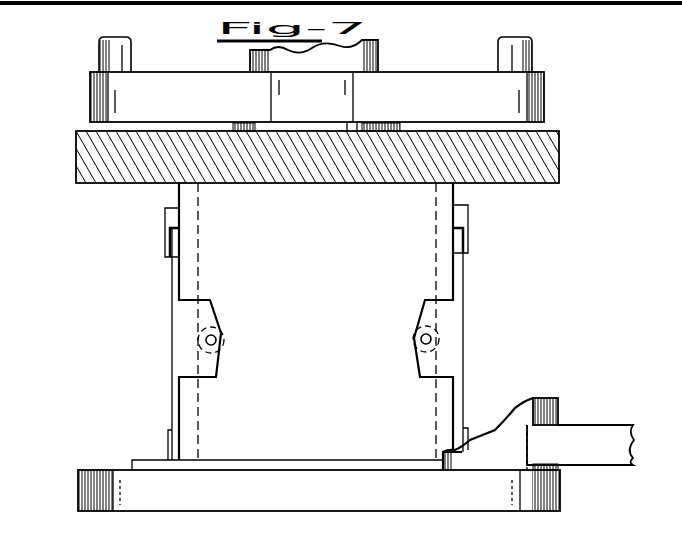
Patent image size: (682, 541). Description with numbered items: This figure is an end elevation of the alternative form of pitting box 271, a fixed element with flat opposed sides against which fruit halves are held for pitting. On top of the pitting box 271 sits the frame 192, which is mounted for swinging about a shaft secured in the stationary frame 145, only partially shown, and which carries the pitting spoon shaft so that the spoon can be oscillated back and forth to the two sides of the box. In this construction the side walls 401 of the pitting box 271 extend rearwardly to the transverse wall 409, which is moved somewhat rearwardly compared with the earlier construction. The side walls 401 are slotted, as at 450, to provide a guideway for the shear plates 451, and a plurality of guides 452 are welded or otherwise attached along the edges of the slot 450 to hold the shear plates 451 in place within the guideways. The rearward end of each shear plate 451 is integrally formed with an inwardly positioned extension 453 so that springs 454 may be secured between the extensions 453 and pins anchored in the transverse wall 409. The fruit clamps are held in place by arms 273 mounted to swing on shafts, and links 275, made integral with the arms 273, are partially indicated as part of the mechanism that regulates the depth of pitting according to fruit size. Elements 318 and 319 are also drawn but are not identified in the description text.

The guide post 318 is at (115, 52).
The upper plate 319 is at (123, 95).
The frame 192 is at (346, 66).
The stationary frame 145 is at (112, 160).
The transverse wall 409 is at (339, 249).
The side walls 401 is at (178, 197).
The shear plates 451 is at (172, 365).
The guides 452 is at (165, 241).
The extension 453 is at (207, 362).
The springs 454 is at (223, 335).
The slot 450 is at (178, 460).
The pitting box 271 is at (402, 512).
The arms 273 is at (545, 415).
The links 275 is at (583, 443).